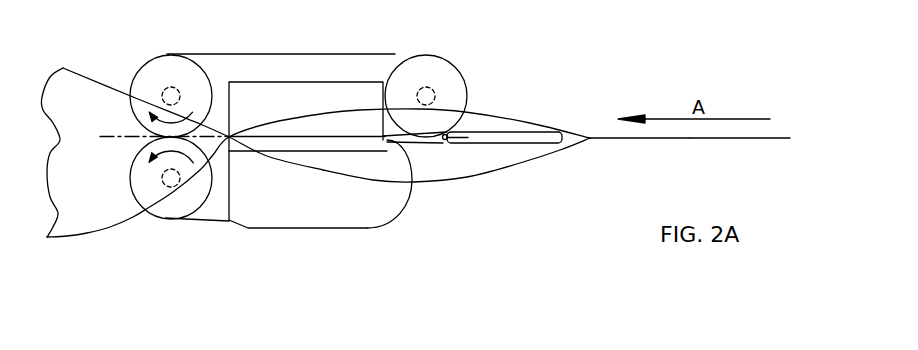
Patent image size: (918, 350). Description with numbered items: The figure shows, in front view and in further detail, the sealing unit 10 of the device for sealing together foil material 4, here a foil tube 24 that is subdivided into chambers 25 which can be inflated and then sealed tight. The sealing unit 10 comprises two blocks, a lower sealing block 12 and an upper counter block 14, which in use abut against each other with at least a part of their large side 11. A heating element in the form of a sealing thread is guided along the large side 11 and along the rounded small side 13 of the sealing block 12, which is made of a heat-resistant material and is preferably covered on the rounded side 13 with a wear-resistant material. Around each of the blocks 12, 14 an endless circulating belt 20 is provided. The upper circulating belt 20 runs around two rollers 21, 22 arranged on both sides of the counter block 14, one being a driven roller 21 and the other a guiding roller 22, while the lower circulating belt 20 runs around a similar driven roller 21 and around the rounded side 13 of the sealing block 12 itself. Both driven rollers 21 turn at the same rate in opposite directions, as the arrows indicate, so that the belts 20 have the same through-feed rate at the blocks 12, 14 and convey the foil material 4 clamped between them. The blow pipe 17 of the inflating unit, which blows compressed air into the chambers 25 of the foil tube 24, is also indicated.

The sealing unit 10 is at (505, 56).
The large side 11 is at (344, 136).
The sealing block 12 is at (307, 217).
The rounded side 13 is at (415, 197).
The counter block 14 is at (281, 111).
The blow pipe 17 is at (445, 139).
The endless circulating belt 20 is at (232, 54).
The driven roller 21 is at (163, 67).
The guiding roller 22 is at (427, 67).
The foil tube 24 is at (740, 157).
The chamber 25 is at (85, 208).
The foil material 4 is at (692, 140).